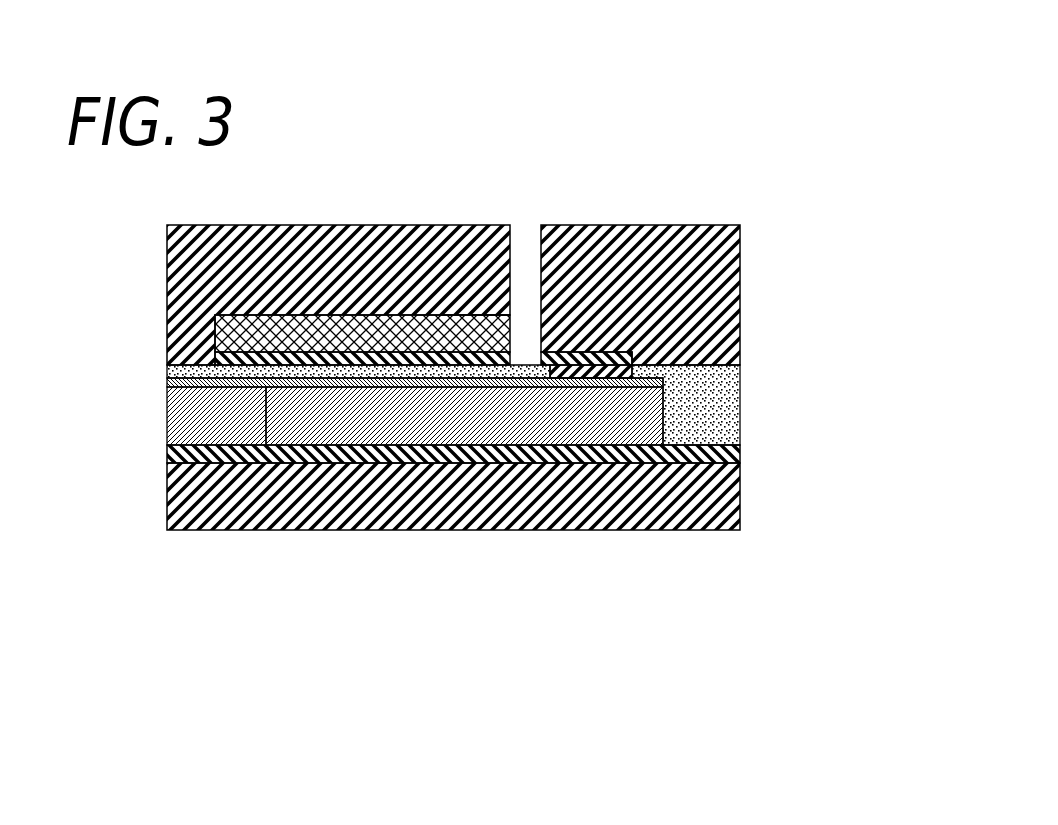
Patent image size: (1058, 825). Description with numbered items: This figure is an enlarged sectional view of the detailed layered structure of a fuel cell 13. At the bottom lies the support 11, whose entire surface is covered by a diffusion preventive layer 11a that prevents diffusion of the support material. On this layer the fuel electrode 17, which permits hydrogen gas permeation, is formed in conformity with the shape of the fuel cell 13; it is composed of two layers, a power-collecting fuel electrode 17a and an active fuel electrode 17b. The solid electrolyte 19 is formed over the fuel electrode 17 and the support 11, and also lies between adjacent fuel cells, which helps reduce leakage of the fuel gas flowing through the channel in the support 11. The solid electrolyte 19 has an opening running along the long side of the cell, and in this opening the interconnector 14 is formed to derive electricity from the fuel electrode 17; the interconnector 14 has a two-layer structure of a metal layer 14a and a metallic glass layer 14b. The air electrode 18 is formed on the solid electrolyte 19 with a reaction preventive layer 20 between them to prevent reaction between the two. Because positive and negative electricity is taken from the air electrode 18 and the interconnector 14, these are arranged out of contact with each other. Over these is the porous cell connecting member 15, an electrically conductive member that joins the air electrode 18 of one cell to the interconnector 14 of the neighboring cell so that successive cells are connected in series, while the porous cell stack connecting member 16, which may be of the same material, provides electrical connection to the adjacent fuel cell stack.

The support 11 is at (697, 513).
The diffusion preventive layer 11a is at (522, 463).
The fuel cell 13 is at (481, 303).
The interconnector 14 is at (607, 229).
The metal layer 14a is at (628, 378).
The metallic glass layer 14b is at (600, 365).
The cell connecting member 15 is at (390, 268).
The cell stack connecting member 16 is at (680, 270).
The fuel electrode 17 is at (415, 534).
The power-collecting fuel electrode 17a is at (390, 405).
The active fuel electrode 17b is at (266, 387).
The air electrode 18 is at (288, 315).
The solid electrolyte 19 is at (250, 365).
The reaction preventive layer 20 is at (464, 315).